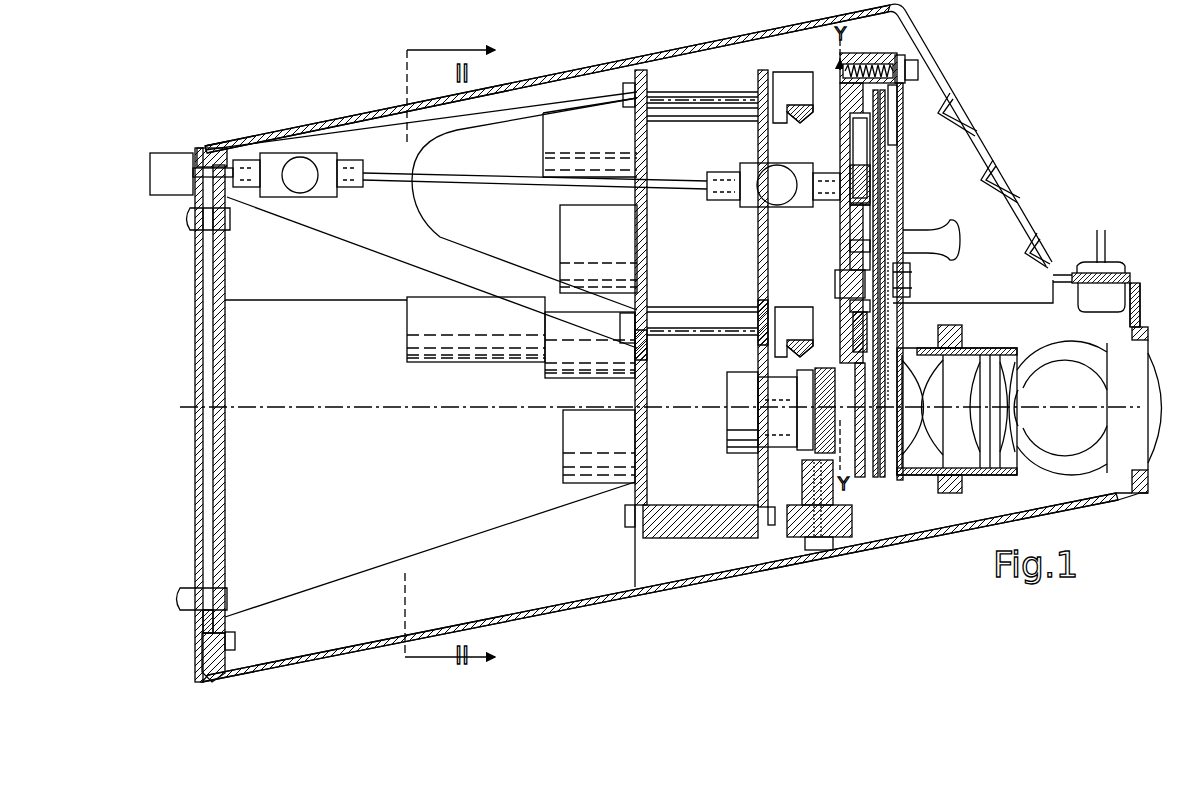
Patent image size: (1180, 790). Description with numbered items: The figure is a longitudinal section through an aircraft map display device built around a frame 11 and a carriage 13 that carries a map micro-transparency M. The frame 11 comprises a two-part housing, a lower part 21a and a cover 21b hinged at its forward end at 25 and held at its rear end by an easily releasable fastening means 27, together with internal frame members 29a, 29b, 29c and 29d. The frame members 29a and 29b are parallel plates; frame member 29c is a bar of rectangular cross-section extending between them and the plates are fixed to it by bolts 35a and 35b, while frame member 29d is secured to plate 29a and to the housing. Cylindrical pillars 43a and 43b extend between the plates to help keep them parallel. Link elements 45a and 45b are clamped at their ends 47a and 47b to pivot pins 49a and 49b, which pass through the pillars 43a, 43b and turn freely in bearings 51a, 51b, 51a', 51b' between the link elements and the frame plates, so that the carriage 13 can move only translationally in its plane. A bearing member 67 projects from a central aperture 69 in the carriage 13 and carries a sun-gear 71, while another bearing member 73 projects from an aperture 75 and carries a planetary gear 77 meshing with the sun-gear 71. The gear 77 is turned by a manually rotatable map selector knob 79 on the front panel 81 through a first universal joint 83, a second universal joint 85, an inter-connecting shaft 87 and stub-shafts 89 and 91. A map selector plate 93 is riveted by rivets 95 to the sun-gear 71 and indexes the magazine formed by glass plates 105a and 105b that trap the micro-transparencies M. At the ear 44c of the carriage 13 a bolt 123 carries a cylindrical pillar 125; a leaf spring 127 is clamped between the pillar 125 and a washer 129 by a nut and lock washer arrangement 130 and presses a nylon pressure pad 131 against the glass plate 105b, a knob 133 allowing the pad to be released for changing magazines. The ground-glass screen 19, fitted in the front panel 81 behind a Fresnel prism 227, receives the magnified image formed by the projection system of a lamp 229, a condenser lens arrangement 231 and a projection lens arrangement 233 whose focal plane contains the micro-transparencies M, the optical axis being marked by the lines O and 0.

The frame 11 is at (381, 503).
The carriage 13 is at (834, 46).
The ground-glass screen 19 is at (213, 343).
The lower part 21a is at (612, 604).
The cover 21b is at (1052, 240).
The hinge connection 25 is at (196, 139).
The releasable fastening means 27 is at (1136, 268).
The frame member 29a is at (649, 75).
The frame member 29b is at (757, 78).
The frame member 29c is at (697, 538).
The frame member 29d is at (367, 260).
The bolt 35a is at (626, 517).
The bolt 35b is at (770, 527).
The cylindrical pillar 43a is at (690, 121).
The cylindrical pillar 43b is at (685, 315).
The ear 44c is at (862, 60).
The link element 45a is at (790, 173).
The link element 45b is at (797, 342).
The end of link element 47a is at (787, 77).
The end of link element 47b is at (786, 312).
The pivot pin 49a is at (730, 92).
The pivot pin 49b is at (722, 336).
The bearing 51a is at (634, 313).
The bearing 51a' is at (769, 289).
The bearing 51b is at (617, 368).
The bearing 51b' is at (743, 312).
The bearing member 67 is at (837, 272).
The central aperture 69 is at (850, 322).
The sun-gear 71 is at (850, 231).
The bearing member 73 is at (850, 175).
The aperture 75 is at (853, 150).
The planetary gear 77 is at (850, 128).
The map selector knob 79 is at (191, 195).
The front panel 81 is at (199, 150).
The first universal joint 83 is at (318, 197).
The second universal joint 85 is at (645, 171).
The inter-connecting shaft 87 is at (513, 181).
The stub-shaft 89 is at (252, 200).
The stub-shaft 91 is at (806, 207).
The map selector plate 93 is at (850, 100).
The rivets 95 is at (850, 246).
The glass plate 105a is at (875, 477).
The glass plate 105b is at (884, 477).
The bolt 123 is at (914, 115).
The cylindrical pillar 125 is at (912, 55).
The leaf spring 127 is at (903, 163).
The washer 129 is at (914, 253).
The nut and lock washer arrangement 130 is at (914, 58).
The nylon pressure pad 131 is at (899, 304).
The knob 133 is at (960, 234).
The Fresnel prism 227 is at (195, 311).
The lamp 229 is at (1048, 349).
The condenser lens arrangement 231 is at (973, 346).
The projection lens arrangement 233 is at (736, 461).
The optical axis 0 is at (177, 406).
The map micro-transparency M is at (873, 401).
The axis point O is at (1124, 410).